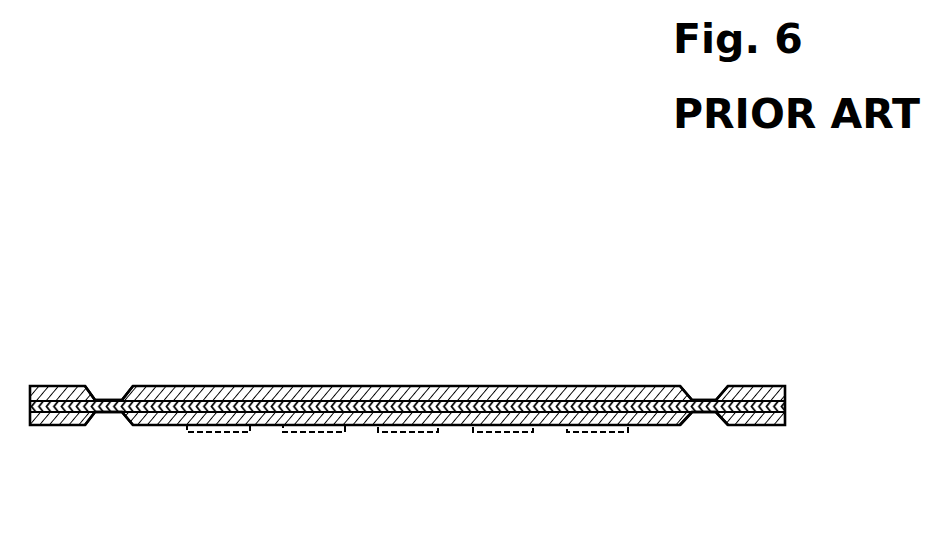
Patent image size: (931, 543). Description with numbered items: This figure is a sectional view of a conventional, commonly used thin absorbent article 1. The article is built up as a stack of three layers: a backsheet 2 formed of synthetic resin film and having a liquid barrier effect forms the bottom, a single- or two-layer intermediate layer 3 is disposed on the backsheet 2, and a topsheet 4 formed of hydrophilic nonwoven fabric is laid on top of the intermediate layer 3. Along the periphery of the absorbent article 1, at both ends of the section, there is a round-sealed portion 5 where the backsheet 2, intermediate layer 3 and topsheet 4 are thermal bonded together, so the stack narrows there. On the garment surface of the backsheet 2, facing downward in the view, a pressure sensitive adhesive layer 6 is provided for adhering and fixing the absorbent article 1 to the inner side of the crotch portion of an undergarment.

The absorbent article 1 is at (588, 296).
The backsheet 2 is at (365, 428).
The intermediate layer 3 is at (458, 428).
The topsheet 4 is at (480, 392).
The round-sealed portion 5 is at (112, 388).
The pressure sensitive adhesive layer 6 is at (593, 433).